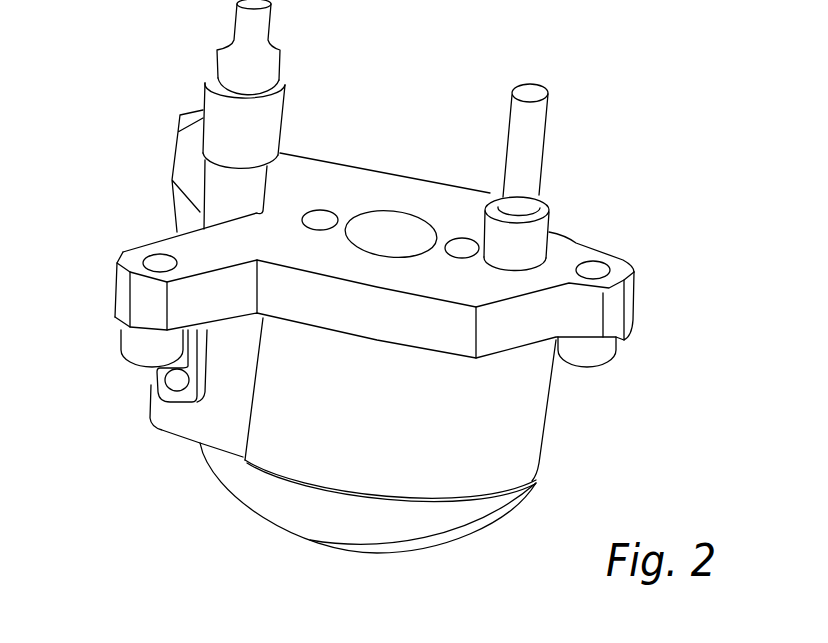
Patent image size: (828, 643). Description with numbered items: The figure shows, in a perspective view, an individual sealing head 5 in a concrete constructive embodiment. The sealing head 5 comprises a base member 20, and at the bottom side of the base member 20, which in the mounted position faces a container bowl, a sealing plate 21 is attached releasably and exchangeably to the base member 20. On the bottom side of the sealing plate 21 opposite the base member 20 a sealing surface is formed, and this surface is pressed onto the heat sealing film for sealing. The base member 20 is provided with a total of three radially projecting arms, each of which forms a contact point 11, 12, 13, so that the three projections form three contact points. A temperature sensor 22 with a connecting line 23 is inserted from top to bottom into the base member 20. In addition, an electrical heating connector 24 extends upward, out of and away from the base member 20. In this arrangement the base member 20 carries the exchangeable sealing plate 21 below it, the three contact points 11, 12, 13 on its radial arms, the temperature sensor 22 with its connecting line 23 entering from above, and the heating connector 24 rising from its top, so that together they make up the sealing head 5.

The sealing head 5 is at (210, 493).
The contact point 11 is at (598, 373).
The contact point 12 is at (165, 212).
The contact point 13 is at (132, 370).
The base member 20 is at (395, 424).
The sealing plate 21 is at (413, 530).
The temperature sensor 22 is at (524, 245).
The connecting line 23 is at (536, 147).
The electrical heating connector 24 is at (225, 72).